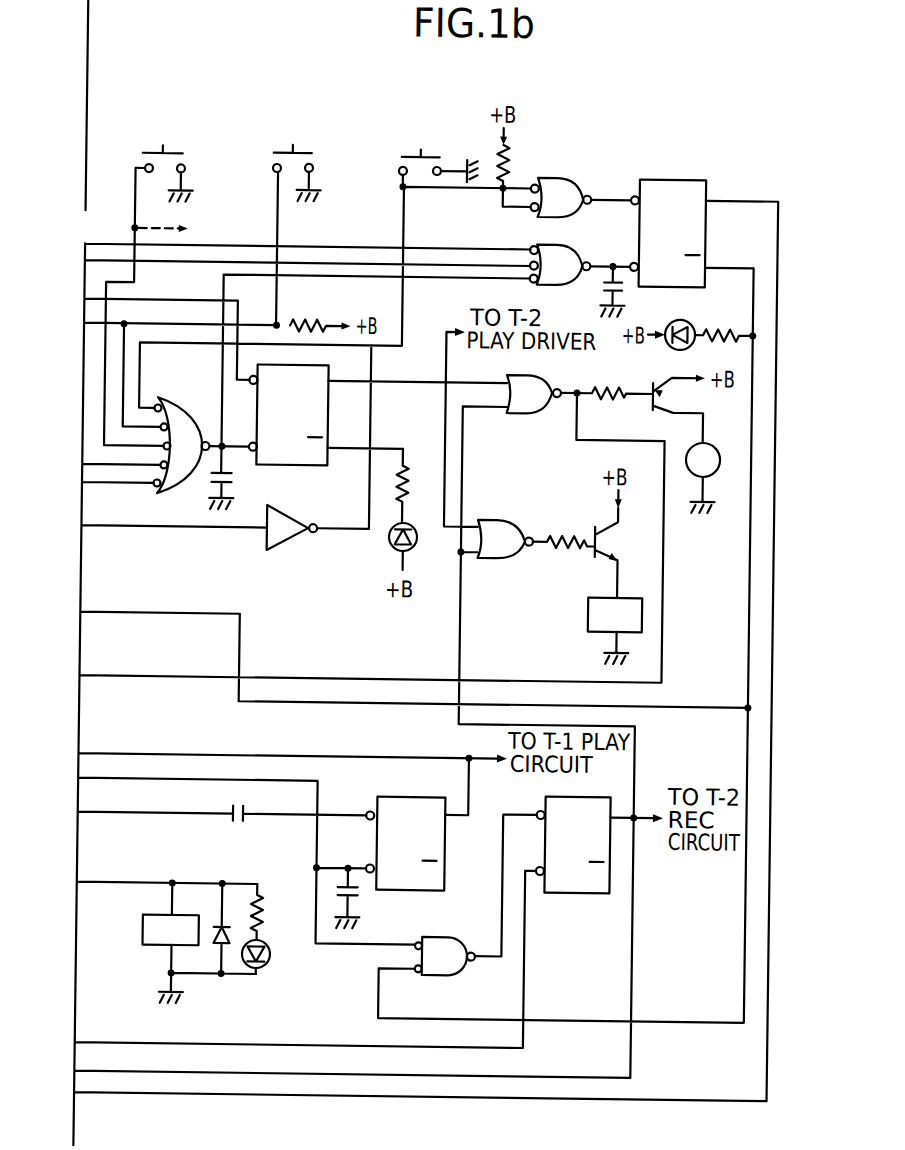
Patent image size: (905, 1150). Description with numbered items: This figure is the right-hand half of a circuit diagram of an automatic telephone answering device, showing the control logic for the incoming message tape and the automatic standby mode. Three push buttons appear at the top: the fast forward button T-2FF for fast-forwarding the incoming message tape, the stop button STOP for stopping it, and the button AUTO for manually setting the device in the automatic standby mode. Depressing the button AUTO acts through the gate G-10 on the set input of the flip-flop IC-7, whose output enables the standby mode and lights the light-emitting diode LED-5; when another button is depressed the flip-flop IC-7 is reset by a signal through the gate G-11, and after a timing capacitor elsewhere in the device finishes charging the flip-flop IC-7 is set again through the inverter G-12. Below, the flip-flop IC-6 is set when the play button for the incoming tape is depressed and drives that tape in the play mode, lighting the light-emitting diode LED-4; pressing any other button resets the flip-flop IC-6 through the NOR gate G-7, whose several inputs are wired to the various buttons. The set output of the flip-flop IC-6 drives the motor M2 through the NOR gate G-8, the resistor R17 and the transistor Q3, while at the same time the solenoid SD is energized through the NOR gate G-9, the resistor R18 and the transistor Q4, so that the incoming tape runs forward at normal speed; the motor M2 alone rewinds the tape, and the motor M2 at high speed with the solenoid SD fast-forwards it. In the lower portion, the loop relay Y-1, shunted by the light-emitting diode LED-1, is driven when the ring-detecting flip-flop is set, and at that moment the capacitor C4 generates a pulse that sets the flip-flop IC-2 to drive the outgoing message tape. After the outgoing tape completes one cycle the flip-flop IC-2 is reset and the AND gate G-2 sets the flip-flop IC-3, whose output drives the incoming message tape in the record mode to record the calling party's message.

The fast forward button T-2FF is at (149, 282).
The stop button STOP is at (298, 159).
The automatic standby button AUTO is at (438, 154).
The gate G-10 is at (549, 181).
The gate G-11 is at (560, 266).
The flip-flop IC-7 is at (668, 233).
The light-emitting diode LED-5 is at (700, 323).
The NOR gate G-7 is at (180, 439).
The flip-flop IC-6 is at (288, 414).
The inverter G-12 is at (302, 519).
The light-emitting diode LED-4 is at (370, 509).
The NOR gate G-8 is at (529, 393).
The resistor R17 is at (607, 384).
The transistor Q3 is at (678, 408).
The drive motor M2 is at (702, 478).
The NOR gate G-9 is at (500, 540).
The resistor R18 is at (564, 531).
The transistor Q4 is at (614, 544).
The solenoid SD is at (614, 631).
The flip-flop IC-2 is at (405, 844).
The capacitor C4 is at (239, 830).
The flip-flop IC-3 is at (573, 844).
The AND gate G-2 is at (445, 958).
The loop relay Y-1 is at (200, 943).
The light-emitting diode LED-1 is at (292, 935).